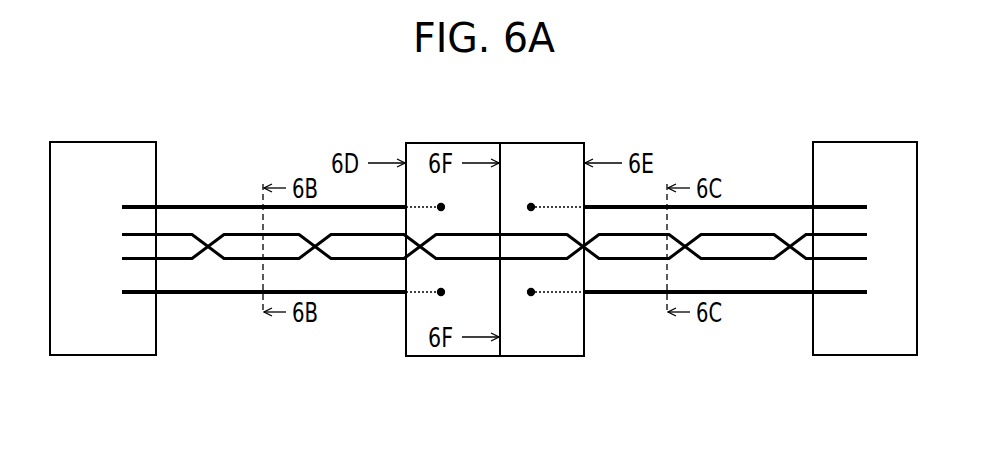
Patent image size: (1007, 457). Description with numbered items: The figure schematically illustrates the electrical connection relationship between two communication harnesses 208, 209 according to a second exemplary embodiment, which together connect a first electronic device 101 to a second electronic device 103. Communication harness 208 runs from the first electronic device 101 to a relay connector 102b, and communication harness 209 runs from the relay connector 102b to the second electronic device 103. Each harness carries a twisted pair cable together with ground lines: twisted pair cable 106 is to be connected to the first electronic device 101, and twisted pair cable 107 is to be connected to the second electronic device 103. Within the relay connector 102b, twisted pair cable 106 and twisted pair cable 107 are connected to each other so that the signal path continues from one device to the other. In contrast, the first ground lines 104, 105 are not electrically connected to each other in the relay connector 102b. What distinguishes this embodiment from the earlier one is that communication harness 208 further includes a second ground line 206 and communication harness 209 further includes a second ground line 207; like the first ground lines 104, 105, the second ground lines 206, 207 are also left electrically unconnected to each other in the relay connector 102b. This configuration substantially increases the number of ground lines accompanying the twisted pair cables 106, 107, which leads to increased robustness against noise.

The first electronic device 101 is at (111, 143).
The second electronic device 103 is at (869, 143).
The relay connector 102b is at (536, 143).
The first ground line 104 is at (172, 205).
The first ground line 105 is at (768, 205).
The twisted pair cable 106 is at (237, 261).
The twisted pair cable 107 is at (630, 261).
The second ground line 206 is at (356, 294).
The second ground line 207 is at (763, 294).
The communication harness 208 is at (241, 342).
The communication harness 209 is at (712, 342).